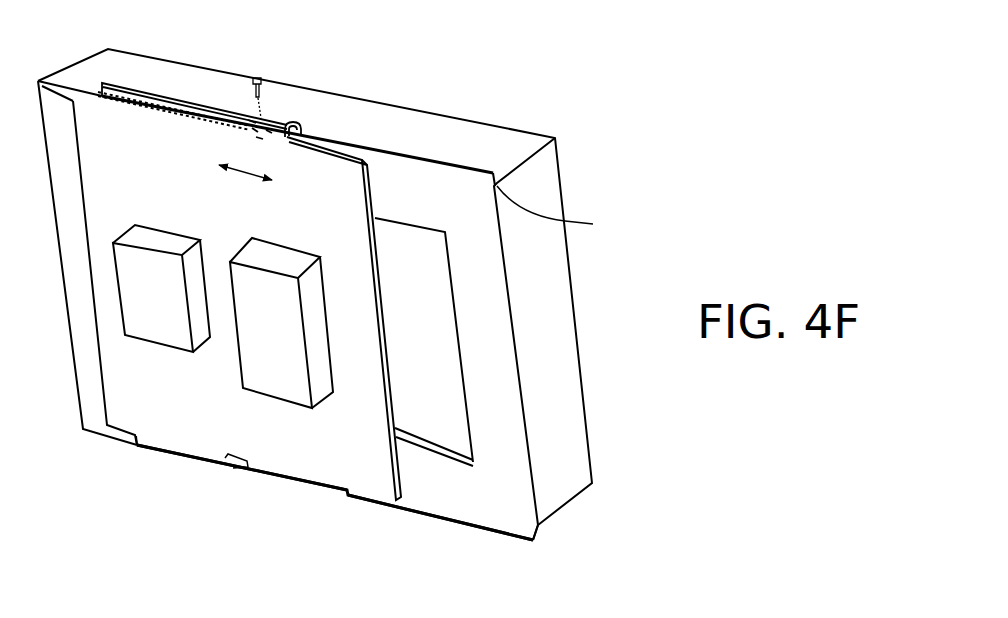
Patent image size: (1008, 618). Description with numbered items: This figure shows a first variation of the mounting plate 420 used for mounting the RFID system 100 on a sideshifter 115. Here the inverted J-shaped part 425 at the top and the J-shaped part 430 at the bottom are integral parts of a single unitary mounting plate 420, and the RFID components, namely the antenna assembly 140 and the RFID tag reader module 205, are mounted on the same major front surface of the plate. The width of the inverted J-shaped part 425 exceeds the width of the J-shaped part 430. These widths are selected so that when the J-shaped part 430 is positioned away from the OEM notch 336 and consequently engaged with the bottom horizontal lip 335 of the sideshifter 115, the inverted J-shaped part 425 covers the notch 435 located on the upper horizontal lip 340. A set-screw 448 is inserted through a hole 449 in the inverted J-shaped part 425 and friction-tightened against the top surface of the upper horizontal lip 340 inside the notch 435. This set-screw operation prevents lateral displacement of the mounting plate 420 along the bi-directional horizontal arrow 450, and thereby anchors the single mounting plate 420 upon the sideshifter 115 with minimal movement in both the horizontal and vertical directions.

The RFID system 100 is at (188, 499).
The sideshifter 115 is at (592, 376).
The antenna assembly 140 is at (161, 288).
The RFID tag reader module 205 is at (281, 323).
The bottom horizontal lip 335 is at (536, 541).
The OEM notch 336 is at (303, 492).
The upper horizontal lip 340 is at (566, 212).
The mounting plate 420 is at (237, 300).
The inverted J-shaped part 425 is at (125, 82).
The J-shaped part 430 is at (173, 453).
The notch 435 is at (238, 137).
The set-screw 448 is at (263, 96).
The hole 449 is at (264, 115).
The bi-directional horizontal arrow 450 is at (245, 175).